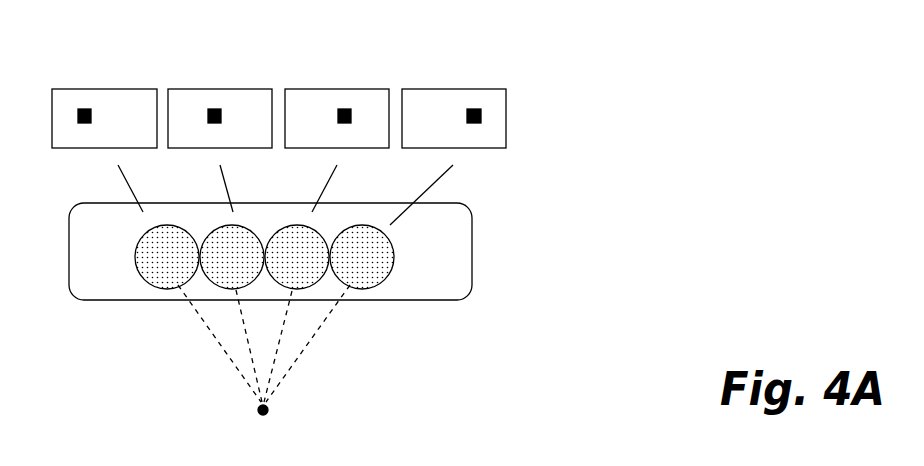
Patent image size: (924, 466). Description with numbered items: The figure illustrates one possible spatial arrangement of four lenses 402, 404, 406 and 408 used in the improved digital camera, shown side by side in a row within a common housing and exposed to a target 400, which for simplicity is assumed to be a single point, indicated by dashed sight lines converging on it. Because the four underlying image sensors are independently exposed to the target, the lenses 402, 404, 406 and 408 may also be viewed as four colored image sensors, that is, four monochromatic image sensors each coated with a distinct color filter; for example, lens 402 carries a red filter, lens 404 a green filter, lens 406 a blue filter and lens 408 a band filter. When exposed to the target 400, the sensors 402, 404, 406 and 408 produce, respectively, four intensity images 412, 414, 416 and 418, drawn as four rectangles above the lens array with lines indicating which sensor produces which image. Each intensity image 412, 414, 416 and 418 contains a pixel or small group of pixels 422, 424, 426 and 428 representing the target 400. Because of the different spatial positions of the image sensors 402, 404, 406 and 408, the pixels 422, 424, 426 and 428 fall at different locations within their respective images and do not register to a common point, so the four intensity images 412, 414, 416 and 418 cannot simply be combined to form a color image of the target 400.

The target 400 is at (264, 369).
The lens 402 is at (152, 273).
The lens 404 is at (218, 235).
The lens 406 is at (290, 228).
The lens 408 is at (373, 270).
The intensity image 412 is at (63, 90).
The intensity image 414 is at (184, 91).
The intensity image 416 is at (338, 111).
The intensity image 418 is at (497, 93).
The pixel 422 is at (90, 110).
The pixel 424 is at (221, 110).
The pixel 426 is at (380, 93).
The pixel 428 is at (467, 111).